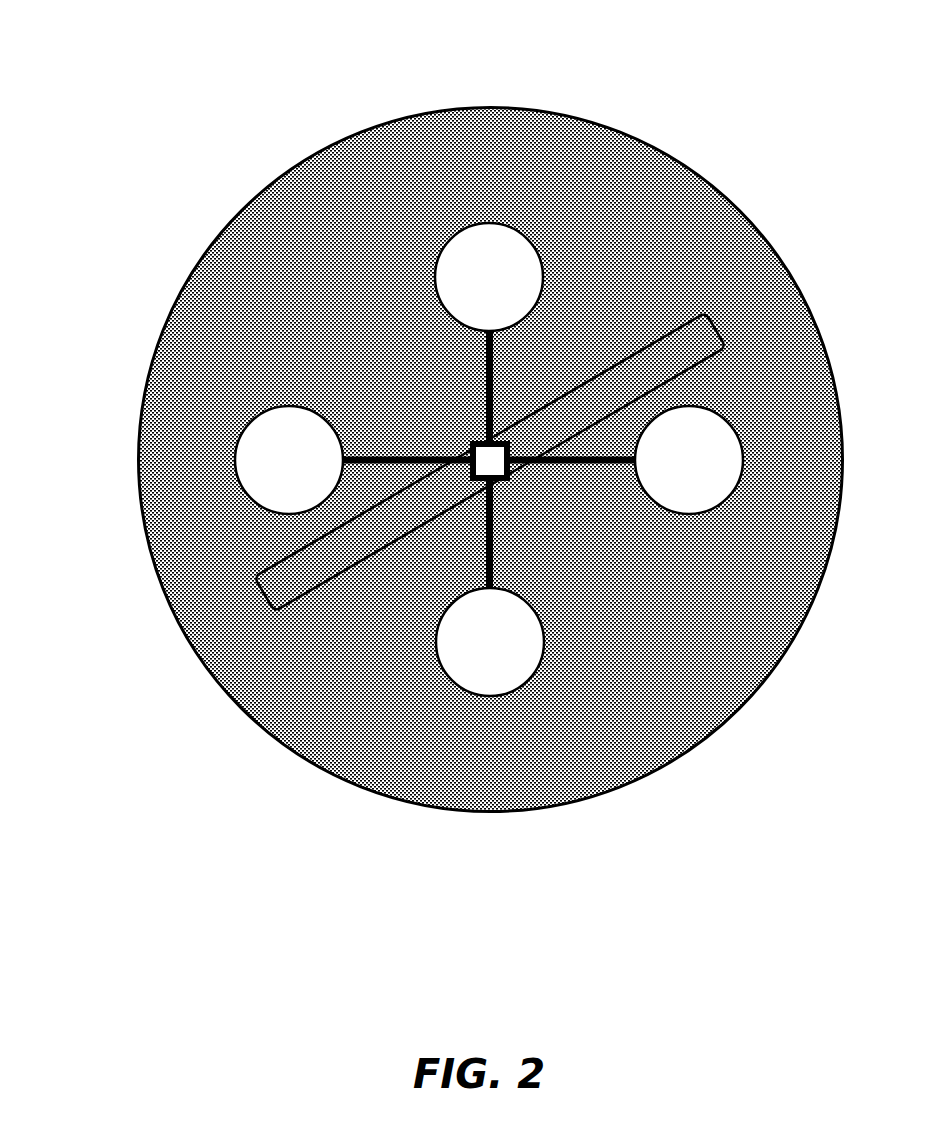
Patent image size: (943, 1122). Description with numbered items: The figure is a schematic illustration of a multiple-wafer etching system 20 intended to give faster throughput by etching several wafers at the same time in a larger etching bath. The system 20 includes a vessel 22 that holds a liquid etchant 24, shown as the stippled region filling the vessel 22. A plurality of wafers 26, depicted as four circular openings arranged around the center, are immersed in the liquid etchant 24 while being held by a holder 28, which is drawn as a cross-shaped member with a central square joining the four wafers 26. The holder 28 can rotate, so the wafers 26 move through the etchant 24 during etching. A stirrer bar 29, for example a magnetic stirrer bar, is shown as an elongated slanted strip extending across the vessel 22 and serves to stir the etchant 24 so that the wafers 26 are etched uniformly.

The multiple-wafer etching system 20 is at (480, 445).
The vessel 22 is at (172, 284).
The liquid etchant 24 is at (360, 142).
The wafers 26 is at (238, 455).
The holder 28 is at (477, 545).
The stirrer bar 29 is at (587, 387).